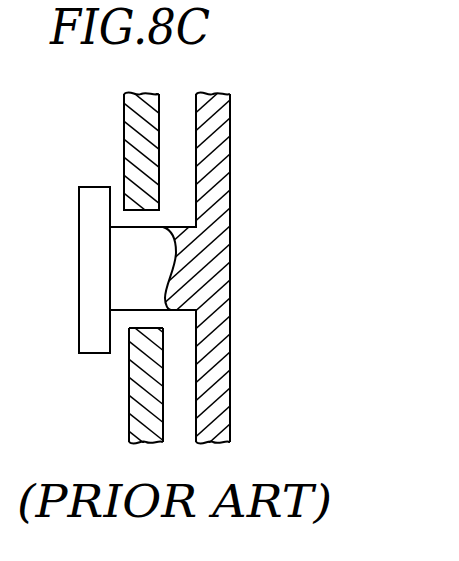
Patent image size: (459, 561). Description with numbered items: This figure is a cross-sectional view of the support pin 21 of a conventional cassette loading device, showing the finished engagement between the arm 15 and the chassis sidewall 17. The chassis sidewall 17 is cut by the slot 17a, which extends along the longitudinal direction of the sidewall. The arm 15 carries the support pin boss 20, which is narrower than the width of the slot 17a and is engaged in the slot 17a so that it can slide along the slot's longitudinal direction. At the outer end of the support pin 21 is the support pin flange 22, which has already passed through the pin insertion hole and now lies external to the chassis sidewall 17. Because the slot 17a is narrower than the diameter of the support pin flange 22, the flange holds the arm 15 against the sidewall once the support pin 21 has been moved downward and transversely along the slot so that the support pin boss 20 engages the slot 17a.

The arm 15 is at (230, 147).
The chassis sidewall 17 is at (125, 133).
The slot 17a is at (148, 328).
The support pin boss 20 is at (122, 260).
The support pin 21 is at (80, 228).
The support pin flange 22 is at (85, 186).